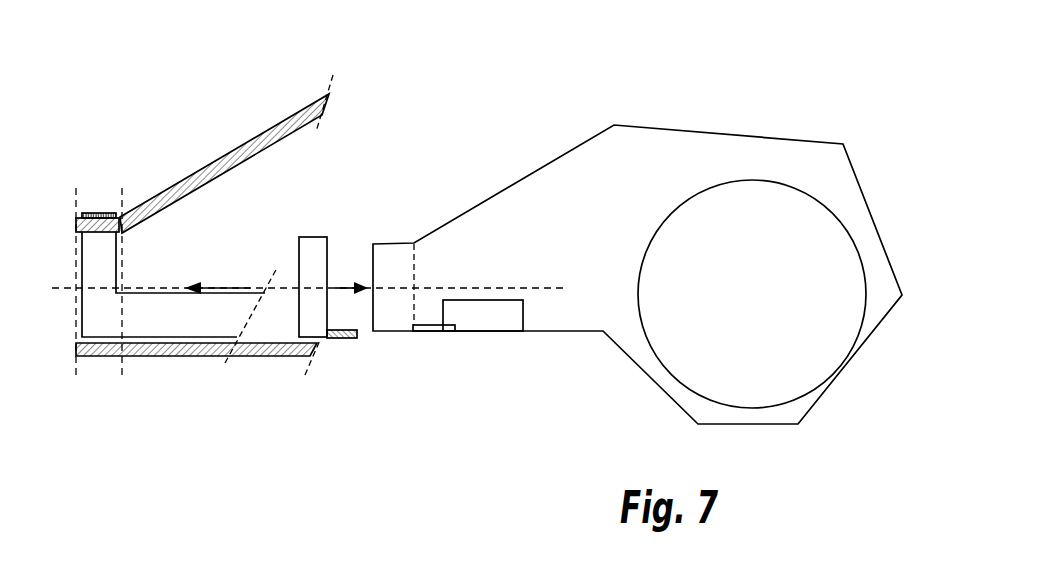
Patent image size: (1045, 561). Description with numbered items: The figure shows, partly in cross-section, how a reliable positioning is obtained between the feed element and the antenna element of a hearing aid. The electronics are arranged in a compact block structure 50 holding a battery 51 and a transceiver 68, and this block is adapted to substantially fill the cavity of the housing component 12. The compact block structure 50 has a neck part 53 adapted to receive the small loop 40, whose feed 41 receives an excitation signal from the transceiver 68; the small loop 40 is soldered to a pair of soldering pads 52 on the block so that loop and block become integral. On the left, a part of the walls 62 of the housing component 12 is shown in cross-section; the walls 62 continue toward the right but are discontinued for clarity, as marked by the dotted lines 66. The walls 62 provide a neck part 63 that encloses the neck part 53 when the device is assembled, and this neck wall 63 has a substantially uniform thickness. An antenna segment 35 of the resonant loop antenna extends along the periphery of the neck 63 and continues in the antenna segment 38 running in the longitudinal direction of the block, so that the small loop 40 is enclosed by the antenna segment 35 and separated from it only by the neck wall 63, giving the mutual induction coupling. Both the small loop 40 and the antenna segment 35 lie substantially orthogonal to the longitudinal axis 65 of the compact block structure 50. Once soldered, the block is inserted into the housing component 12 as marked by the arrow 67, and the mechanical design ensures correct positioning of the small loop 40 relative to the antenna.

The housing component 12 is at (80, 131).
The antenna segment 35 is at (93, 268).
The antenna segment 38 is at (150, 318).
The small loop 40 is at (330, 224).
The feed 41 is at (352, 343).
The compact block structure 50 is at (654, 100).
The battery 51 is at (768, 331).
The soldering pads 52 is at (437, 331).
The neck part 53 is at (396, 243).
The walls 62 is at (201, 168).
The neck part 63 is at (99, 358).
The longitudinal axis 65 is at (552, 288).
The dotted lines 66 is at (330, 82).
The arrow 67 is at (213, 289).
The transceiver 68 is at (510, 318).